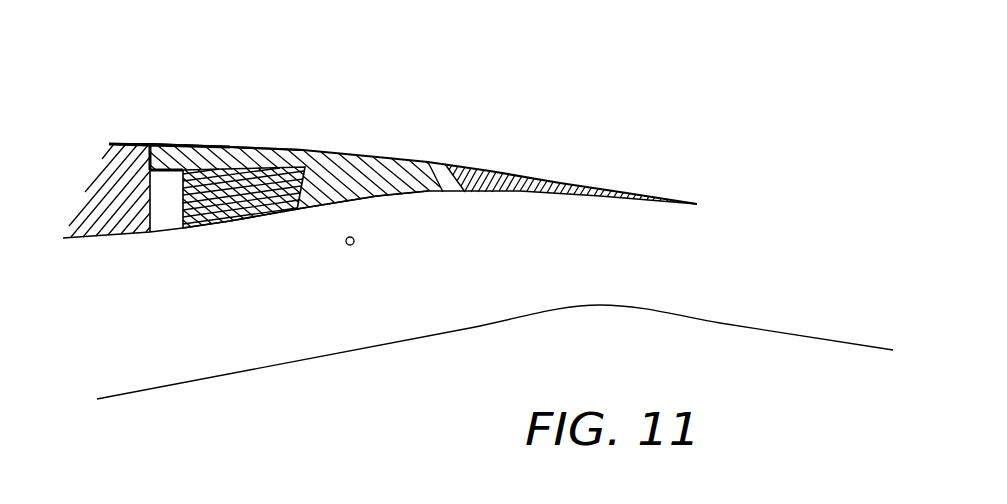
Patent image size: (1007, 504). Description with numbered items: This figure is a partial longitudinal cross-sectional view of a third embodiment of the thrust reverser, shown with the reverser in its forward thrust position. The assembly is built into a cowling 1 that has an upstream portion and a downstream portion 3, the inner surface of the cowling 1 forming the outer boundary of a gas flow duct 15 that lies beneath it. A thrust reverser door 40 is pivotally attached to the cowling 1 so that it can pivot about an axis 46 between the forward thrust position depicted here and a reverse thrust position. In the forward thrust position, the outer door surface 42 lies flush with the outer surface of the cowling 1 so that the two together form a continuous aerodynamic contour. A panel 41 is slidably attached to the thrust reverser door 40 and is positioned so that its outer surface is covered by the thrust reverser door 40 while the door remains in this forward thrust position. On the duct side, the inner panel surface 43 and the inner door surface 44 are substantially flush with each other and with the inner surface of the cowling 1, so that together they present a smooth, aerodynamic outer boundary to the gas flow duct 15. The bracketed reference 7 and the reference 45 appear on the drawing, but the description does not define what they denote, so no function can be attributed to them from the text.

The cowling 1 is at (101, 188).
The downstream portion 3 is at (524, 181).
The layered skin assembly 7 is at (361, 26).
The gas flow duct 15 is at (494, 347).
The thrust reverser door 40 is at (321, 156).
The panel 41 is at (263, 181).
The outer door surface 42 is at (226, 138).
The inner panel surface 43 is at (233, 230).
The inner door surface 44 is at (383, 199).
The leading block 45 is at (183, 157).
The axis 46 is at (353, 246).